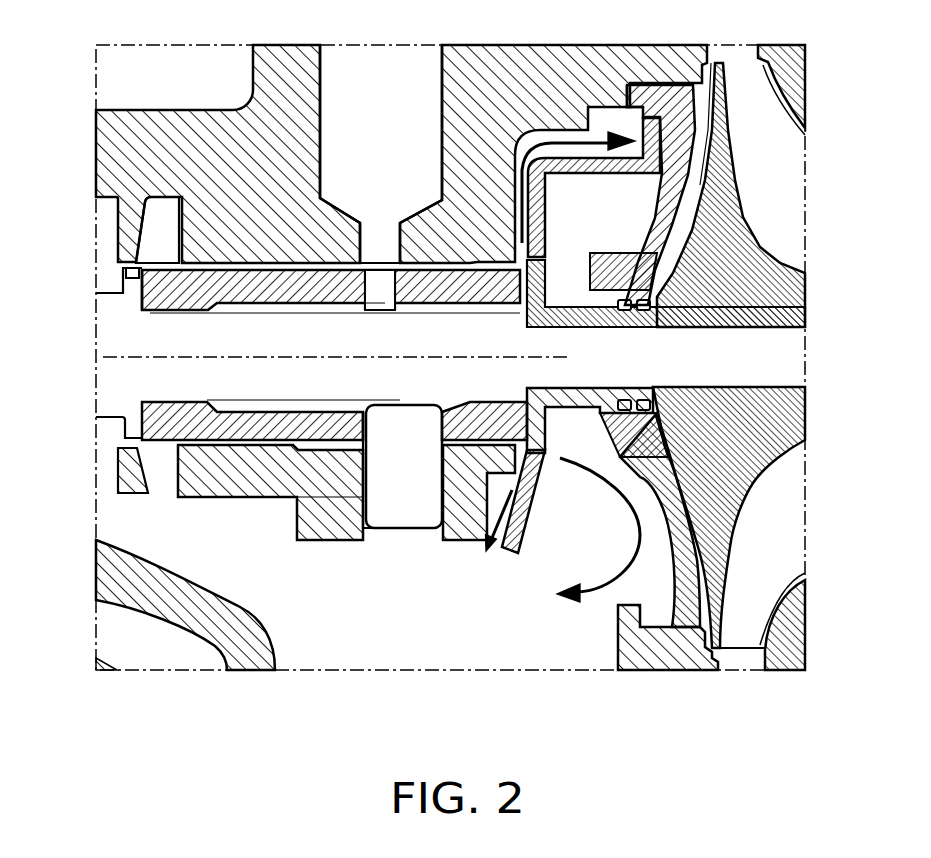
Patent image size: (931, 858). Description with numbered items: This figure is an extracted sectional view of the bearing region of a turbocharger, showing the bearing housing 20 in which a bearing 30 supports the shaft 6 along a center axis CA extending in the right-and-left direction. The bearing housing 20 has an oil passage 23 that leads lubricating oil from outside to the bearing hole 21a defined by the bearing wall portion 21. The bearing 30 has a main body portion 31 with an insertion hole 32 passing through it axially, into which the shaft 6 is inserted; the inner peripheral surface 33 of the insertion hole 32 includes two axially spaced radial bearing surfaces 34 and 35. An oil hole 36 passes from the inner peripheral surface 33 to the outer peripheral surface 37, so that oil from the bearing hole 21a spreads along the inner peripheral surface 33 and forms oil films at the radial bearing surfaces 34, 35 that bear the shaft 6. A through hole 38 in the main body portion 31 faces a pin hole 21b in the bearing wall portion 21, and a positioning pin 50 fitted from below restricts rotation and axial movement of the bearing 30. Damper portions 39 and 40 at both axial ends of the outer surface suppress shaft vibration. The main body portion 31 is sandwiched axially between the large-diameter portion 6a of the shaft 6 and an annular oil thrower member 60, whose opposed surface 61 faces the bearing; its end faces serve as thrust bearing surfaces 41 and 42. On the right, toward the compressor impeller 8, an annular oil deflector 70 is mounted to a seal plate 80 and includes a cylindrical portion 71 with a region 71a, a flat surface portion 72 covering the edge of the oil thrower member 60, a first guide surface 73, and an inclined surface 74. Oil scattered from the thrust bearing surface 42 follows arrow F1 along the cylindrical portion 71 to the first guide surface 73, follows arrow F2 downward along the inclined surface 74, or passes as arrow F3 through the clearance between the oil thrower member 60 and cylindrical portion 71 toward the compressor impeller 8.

The shaft 6 is at (480, 345).
The large-diameter portion 6a is at (135, 262).
The compressor impeller 8 is at (777, 173).
The bearing housing 20 is at (133, 155).
The bearing wall portion 21 is at (228, 450).
The bearing hole 21a is at (222, 262).
The pin hole 21b is at (380, 440).
The oil passage 23 is at (388, 215).
The bearing 30 is at (312, 262).
The main body portion 31 is at (267, 262).
The insertion hole 32 is at (372, 305).
The inner peripheral surface 33 is at (348, 303).
The radial bearing surface 34 is at (165, 402).
The radial bearing surface 35 is at (473, 462).
The oil hole 36 is at (410, 268).
The outer peripheral surface 37 is at (316, 500).
The through hole 38 is at (376, 527).
The damper portion 39 is at (213, 445).
The damper portion 40 is at (493, 497).
The thrust bearing surface 41 is at (123, 423).
The thrust bearing surface 42 is at (655, 547).
The positioning pin 50 is at (418, 487).
The oil thrower member 60 is at (590, 295).
The opposed surface 61 is at (600, 282).
The oil deflector 70 is at (588, 200).
The cylindrical portion 71 is at (597, 130).
The bracket flange 71a is at (622, 60).
The flat surface portion 72 is at (522, 237).
The first guide surface 73 is at (662, 72).
The inclined surface 74 is at (515, 560).
The seal plate 80 is at (698, 112).
The center axis CA is at (356, 357).
The arrow F1 is at (540, 130).
The arrow F2 is at (607, 583).
The arrow F3 is at (690, 650).